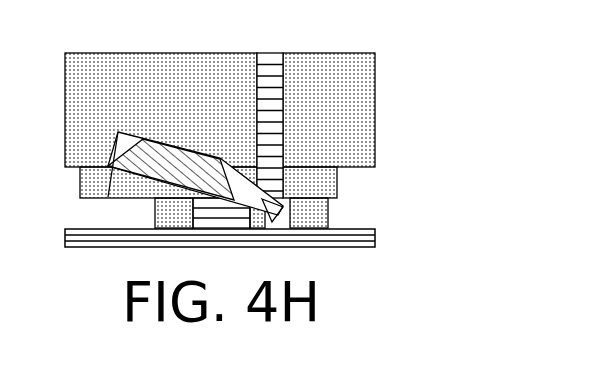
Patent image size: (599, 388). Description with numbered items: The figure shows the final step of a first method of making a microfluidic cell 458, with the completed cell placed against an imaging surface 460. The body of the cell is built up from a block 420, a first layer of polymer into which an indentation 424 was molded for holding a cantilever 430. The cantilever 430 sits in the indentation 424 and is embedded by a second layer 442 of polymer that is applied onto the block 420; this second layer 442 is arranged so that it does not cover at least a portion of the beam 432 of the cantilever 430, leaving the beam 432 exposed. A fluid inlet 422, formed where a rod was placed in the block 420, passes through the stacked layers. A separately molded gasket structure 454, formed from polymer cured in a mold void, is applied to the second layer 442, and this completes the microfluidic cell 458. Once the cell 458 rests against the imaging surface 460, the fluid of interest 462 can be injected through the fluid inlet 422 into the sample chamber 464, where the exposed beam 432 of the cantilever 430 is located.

The microfluidic cell 458 is at (131, 48).
The fluid of interest 462 is at (259, 52).
The fluid inlet 422 is at (266, 54).
The block 420 is at (338, 170).
The second layer 442 is at (330, 200).
The indentation 424 is at (106, 197).
The cantilever 430 is at (158, 184).
The gasket structure 454 is at (176, 232).
The beam 432 is at (241, 230).
The sample chamber 464 is at (251, 243).
The imaging surface 460 is at (312, 246).